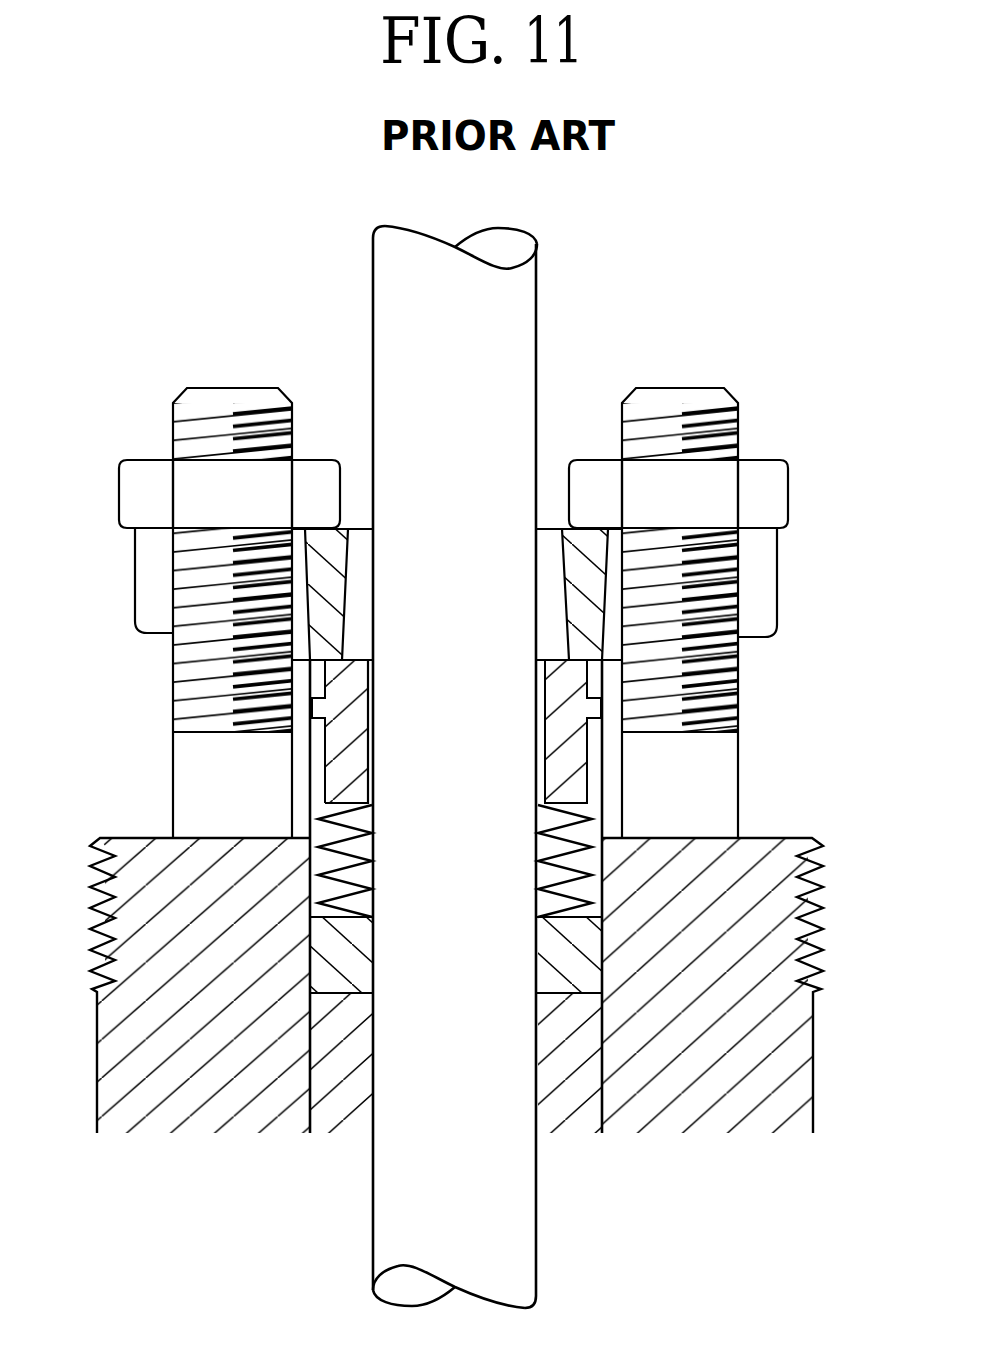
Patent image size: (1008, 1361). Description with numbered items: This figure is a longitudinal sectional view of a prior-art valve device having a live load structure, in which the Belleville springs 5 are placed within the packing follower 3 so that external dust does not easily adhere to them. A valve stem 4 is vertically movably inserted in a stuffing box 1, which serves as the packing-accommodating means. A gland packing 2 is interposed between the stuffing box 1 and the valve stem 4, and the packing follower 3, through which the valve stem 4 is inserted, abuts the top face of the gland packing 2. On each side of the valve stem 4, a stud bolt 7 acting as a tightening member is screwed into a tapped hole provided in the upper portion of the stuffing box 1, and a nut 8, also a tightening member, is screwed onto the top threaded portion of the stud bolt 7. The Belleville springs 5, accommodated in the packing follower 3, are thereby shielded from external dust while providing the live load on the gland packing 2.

The stuffing box 1 is at (797, 1048).
The gland packing 2 is at (570, 1098).
The packing follower 3 is at (604, 937).
The valve stem 4 is at (518, 325).
The Belleville springs 5 is at (322, 813).
The stud bolt 7 is at (738, 417).
The nut 8 is at (780, 505).